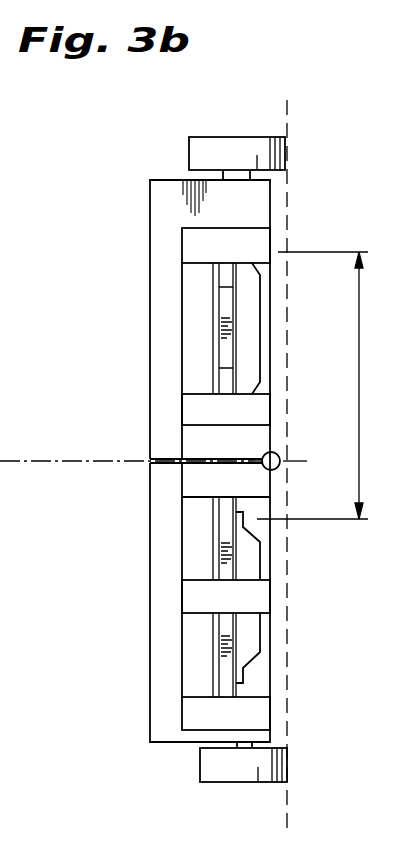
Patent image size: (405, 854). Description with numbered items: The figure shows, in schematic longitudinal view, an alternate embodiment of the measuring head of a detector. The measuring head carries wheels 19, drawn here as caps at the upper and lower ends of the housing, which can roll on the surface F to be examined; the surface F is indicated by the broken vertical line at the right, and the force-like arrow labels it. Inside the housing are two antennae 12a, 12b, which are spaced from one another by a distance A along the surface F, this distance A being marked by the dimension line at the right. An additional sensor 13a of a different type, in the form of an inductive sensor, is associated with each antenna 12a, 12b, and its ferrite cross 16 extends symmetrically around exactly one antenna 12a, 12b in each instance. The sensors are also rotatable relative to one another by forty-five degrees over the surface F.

The antenna 12a is at (262, 322).
The antenna 12b is at (262, 637).
The additional sensor 13a is at (178, 248).
The ferrite cross 16 is at (193, 412).
The wheel 19 is at (217, 150).
The surface F is at (290, 150).
The distance A is at (322, 385).